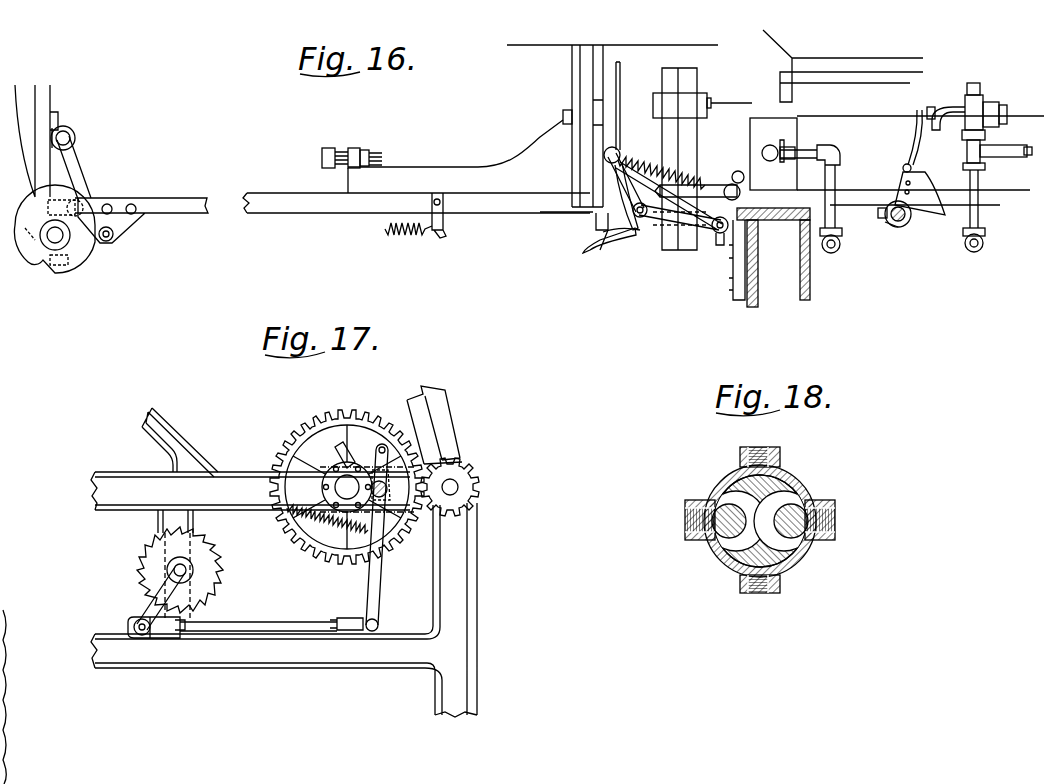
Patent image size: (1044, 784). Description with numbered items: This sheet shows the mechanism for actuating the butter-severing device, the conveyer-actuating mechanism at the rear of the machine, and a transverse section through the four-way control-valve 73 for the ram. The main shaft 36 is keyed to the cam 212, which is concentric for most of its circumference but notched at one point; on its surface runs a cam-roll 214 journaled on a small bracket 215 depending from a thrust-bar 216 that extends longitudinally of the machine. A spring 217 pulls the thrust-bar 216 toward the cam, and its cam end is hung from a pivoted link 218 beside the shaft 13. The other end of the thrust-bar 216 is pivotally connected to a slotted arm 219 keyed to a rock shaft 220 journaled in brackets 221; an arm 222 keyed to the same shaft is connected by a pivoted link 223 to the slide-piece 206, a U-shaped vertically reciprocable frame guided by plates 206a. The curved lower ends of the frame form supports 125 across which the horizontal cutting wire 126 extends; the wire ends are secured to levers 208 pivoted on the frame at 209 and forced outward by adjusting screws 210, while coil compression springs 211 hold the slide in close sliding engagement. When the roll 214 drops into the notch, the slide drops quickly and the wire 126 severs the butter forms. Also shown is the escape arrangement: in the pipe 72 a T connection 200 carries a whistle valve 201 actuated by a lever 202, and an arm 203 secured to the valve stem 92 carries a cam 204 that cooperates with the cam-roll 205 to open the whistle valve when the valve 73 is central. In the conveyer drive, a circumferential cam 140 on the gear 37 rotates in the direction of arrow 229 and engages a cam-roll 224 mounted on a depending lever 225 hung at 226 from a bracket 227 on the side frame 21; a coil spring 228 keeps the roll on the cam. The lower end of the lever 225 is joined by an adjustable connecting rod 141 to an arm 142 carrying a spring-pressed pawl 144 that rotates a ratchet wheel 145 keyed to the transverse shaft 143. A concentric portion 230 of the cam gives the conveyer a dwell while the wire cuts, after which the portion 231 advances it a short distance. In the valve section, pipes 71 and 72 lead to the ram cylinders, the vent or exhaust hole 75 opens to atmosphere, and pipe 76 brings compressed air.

In FIG. 16, the shaft 13 is at (35, 260).
In FIG. 16, the main shaft 36 is at (57, 243).
In FIG. 16, the cam 212 is at (82, 250).
In FIG. 16, the cam-roll 214 is at (113, 238).
In FIG. 16, the bracket 215 is at (118, 203).
In FIG. 16, the pivoted link 218 is at (73, 162).
In FIG. 16, the thrust-bar 216 is at (295, 207).
In FIG. 16, the spring 217 is at (405, 237).
In FIG. 16, the vertically reciprocable frame 206 is at (611, 90).
In FIG. 16, the plates 206a is at (597, 92).
In FIG. 16, the pivot 209 is at (655, 103).
In FIG. 16, the coil compression springs 211 is at (650, 177).
In FIG. 16, the adjusting screws 210 is at (683, 157).
In FIG. 16, the pivoted link 223 is at (620, 197).
In FIG. 16, the supports 125 is at (633, 230).
In FIG. 16, the cutting wire 126 is at (607, 230).
In FIG. 16, the levers 208 is at (640, 217).
In FIG. 16, the arm 222 is at (693, 243).
In FIG. 16, the rock shaft 220 is at (713, 250).
In FIG. 16, the slotted arm 219 is at (740, 182).
In FIG. 16, the brackets 221 is at (743, 283).
In FIG. 16, the lever 202 is at (930, 128).
In FIG. 16, the whistle valve 201 is at (972, 115).
In FIG. 16, the T connection 200 is at (980, 148).
In FIG. 16, the cam-roll 205 is at (905, 166).
In FIG. 16, the cam 204 is at (923, 187).
In FIG. 16, the arm 203 is at (912, 217).
In FIG. 16, the valve stem 92 is at (900, 224).
In FIG. 17, the frame 21 is at (284, 562).
In FIG. 17, the circumferential cam 140 is at (322, 425).
In FIG. 17, the portion of the cam 231 is at (342, 445).
In FIG. 17, the gear 37 is at (357, 413).
In FIG. 17, the pivot 226 is at (405, 458).
In FIG. 17, the bracket 227 is at (410, 465).
In FIG. 17, the cam-roll 224 is at (410, 512).
In FIG. 17, the depending lever 225 is at (373, 583).
In FIG. 17, the coil spring 228 is at (307, 527).
In FIG. 17, the concentric portion of the cam 230 is at (278, 462).
In FIG. 17, the arrow 229 is at (270, 442).
In FIG. 17, the transverse shaft 143 is at (190, 560).
In FIG. 17, the arm 142 is at (160, 589).
In FIG. 17, the ratchet wheel 145 is at (220, 582).
In FIG. 17, the adjustable connecting rod 141 is at (277, 623).
In FIG. 17, the spring-pressed pawl 144 is at (177, 630).
In FIG. 18, the pipe 71 is at (676, 520).
In FIG. 18, the pipe 72 is at (844, 520).
In FIG. 18, the control-valve 73 is at (812, 550).
In FIG. 18, the vent or exhaust hole 75 is at (762, 442).
In FIG. 18, the pipe 76 is at (760, 599).